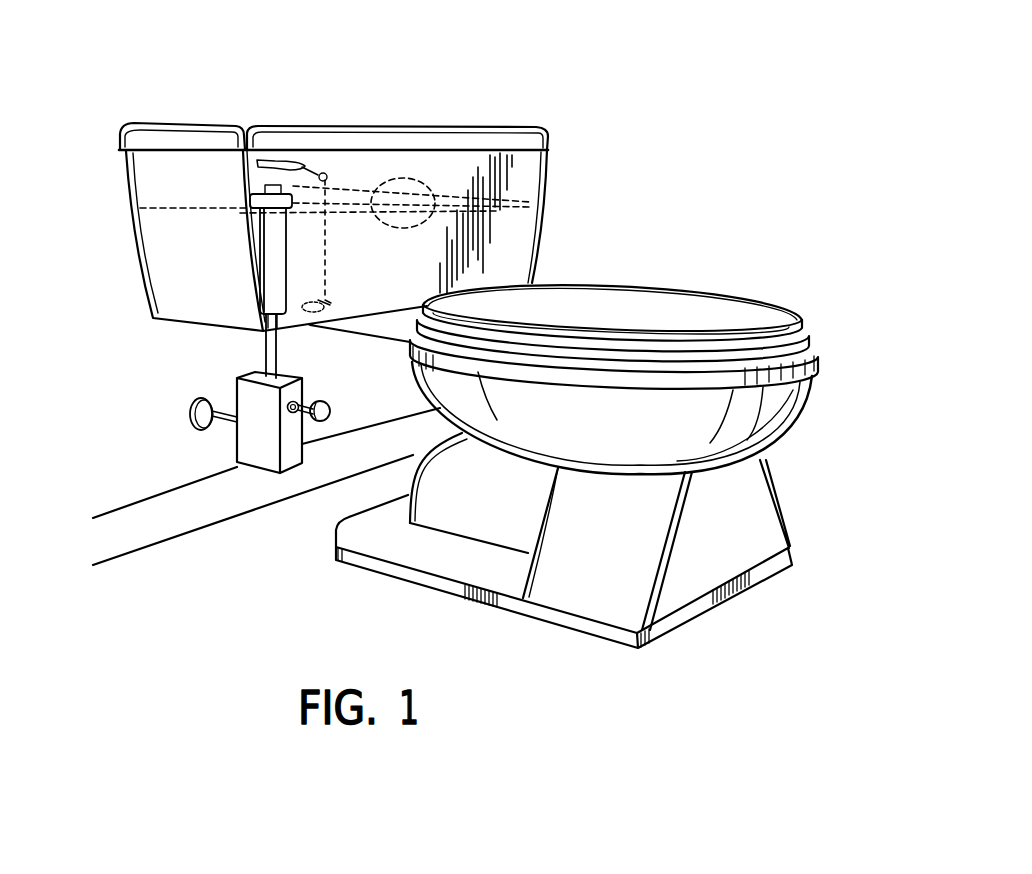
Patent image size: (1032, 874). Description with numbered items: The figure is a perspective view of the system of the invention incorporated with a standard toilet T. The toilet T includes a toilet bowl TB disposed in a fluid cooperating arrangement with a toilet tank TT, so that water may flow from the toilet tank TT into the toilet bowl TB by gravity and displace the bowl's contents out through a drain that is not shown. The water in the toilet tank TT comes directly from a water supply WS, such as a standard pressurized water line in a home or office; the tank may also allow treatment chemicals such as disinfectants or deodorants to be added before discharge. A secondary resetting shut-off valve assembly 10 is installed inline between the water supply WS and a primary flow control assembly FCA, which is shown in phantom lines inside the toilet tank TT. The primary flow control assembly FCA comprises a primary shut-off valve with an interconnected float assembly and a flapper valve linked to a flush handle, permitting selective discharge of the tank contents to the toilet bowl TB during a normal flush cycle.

The secondary resetting shut-off valve assembly 10 is at (212, 373).
The water supply WS is at (222, 428).
The primary flow control assembly FCA is at (357, 179).
The toilet tank TT is at (542, 190).
The toilet T is at (514, 339).
The toilet bowl TB is at (813, 402).